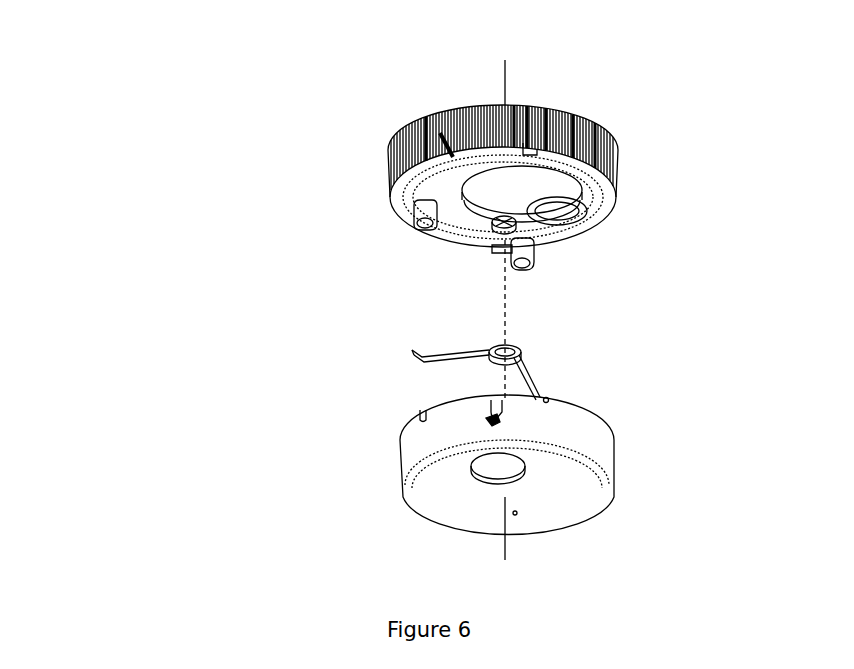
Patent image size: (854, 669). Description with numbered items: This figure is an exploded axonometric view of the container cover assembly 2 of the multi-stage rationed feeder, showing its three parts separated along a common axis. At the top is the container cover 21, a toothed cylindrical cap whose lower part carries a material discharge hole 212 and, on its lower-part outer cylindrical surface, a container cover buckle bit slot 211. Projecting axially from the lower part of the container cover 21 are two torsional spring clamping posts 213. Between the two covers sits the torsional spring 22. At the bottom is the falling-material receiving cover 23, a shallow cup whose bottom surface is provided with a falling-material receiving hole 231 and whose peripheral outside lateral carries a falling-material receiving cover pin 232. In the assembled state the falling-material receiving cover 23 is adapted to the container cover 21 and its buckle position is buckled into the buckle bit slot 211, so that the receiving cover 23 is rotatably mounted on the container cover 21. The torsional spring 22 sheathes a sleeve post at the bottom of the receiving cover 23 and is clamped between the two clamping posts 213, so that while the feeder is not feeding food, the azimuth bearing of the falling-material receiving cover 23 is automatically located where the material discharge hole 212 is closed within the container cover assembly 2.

The container cover assembly 2 is at (185, 202).
The container cover 21 is at (388, 163).
The container cover buckle bit slot 211 is at (445, 140).
The material discharge hole 212 is at (556, 205).
The torsional spring clamping posts 213 is at (533, 262).
The torsional spring 22 is at (390, 352).
The falling-material receiving cover 23 is at (390, 470).
The falling-material receiving hole 231 is at (497, 463).
The falling-material receiving cover pin 232 is at (505, 421).